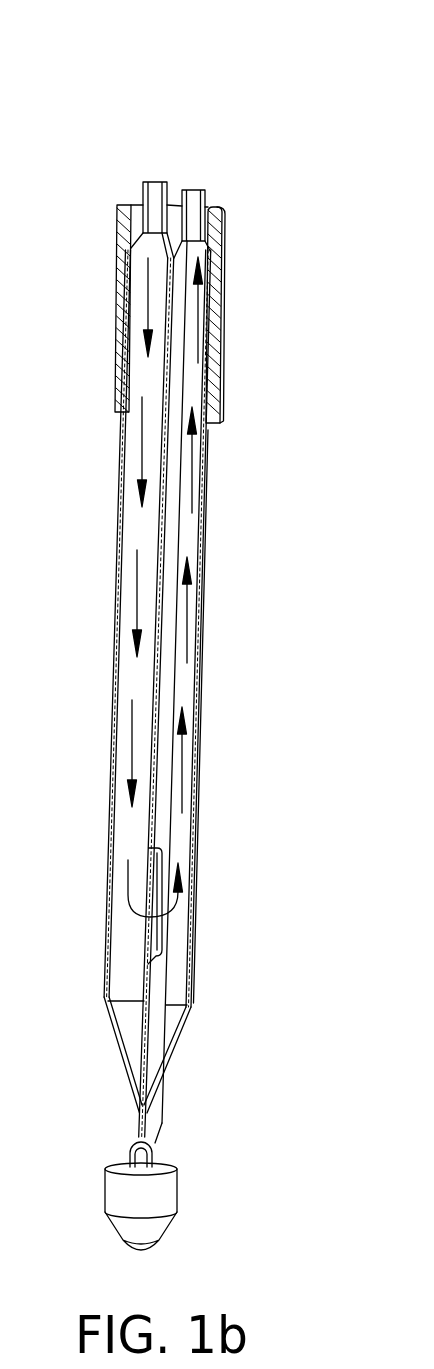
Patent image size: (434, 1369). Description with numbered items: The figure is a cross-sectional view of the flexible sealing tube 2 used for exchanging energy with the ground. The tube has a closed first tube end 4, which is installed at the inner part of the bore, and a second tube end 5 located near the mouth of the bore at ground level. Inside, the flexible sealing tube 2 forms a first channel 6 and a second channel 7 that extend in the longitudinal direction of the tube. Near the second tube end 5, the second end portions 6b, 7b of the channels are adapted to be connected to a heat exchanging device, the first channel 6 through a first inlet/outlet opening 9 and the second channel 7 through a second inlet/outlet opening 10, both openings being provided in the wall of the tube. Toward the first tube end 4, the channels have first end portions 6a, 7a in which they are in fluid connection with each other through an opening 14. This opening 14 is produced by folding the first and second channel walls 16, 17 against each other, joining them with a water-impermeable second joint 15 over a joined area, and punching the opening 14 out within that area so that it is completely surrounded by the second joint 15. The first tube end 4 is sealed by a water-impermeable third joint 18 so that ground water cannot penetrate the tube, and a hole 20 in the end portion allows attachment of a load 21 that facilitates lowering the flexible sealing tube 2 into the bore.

The flexible sealing tube 2 is at (203, 551).
The first tube end 4 is at (167, 1068).
The second tube end 5 is at (152, 256).
The first channel 6 is at (128, 612).
The first end portion of first channel 6a is at (97, 767).
The second end portion of first channel 6b is at (117, 203).
The second channel 7 is at (185, 619).
The first end portion of second channel 7a is at (220, 778).
The second end portion of second channel 7b is at (242, 215).
The first inlet/outlet opening 9 is at (131, 244).
The second inlet/outlet opening 10 is at (200, 249).
The opening 14 is at (155, 940).
The second joint 15 is at (162, 927).
The first channel wall 16 is at (150, 688).
The second channel wall 17 is at (168, 686).
The third joint 18 is at (162, 1107).
The hole 20 is at (152, 1152).
The load 21 is at (148, 1190).